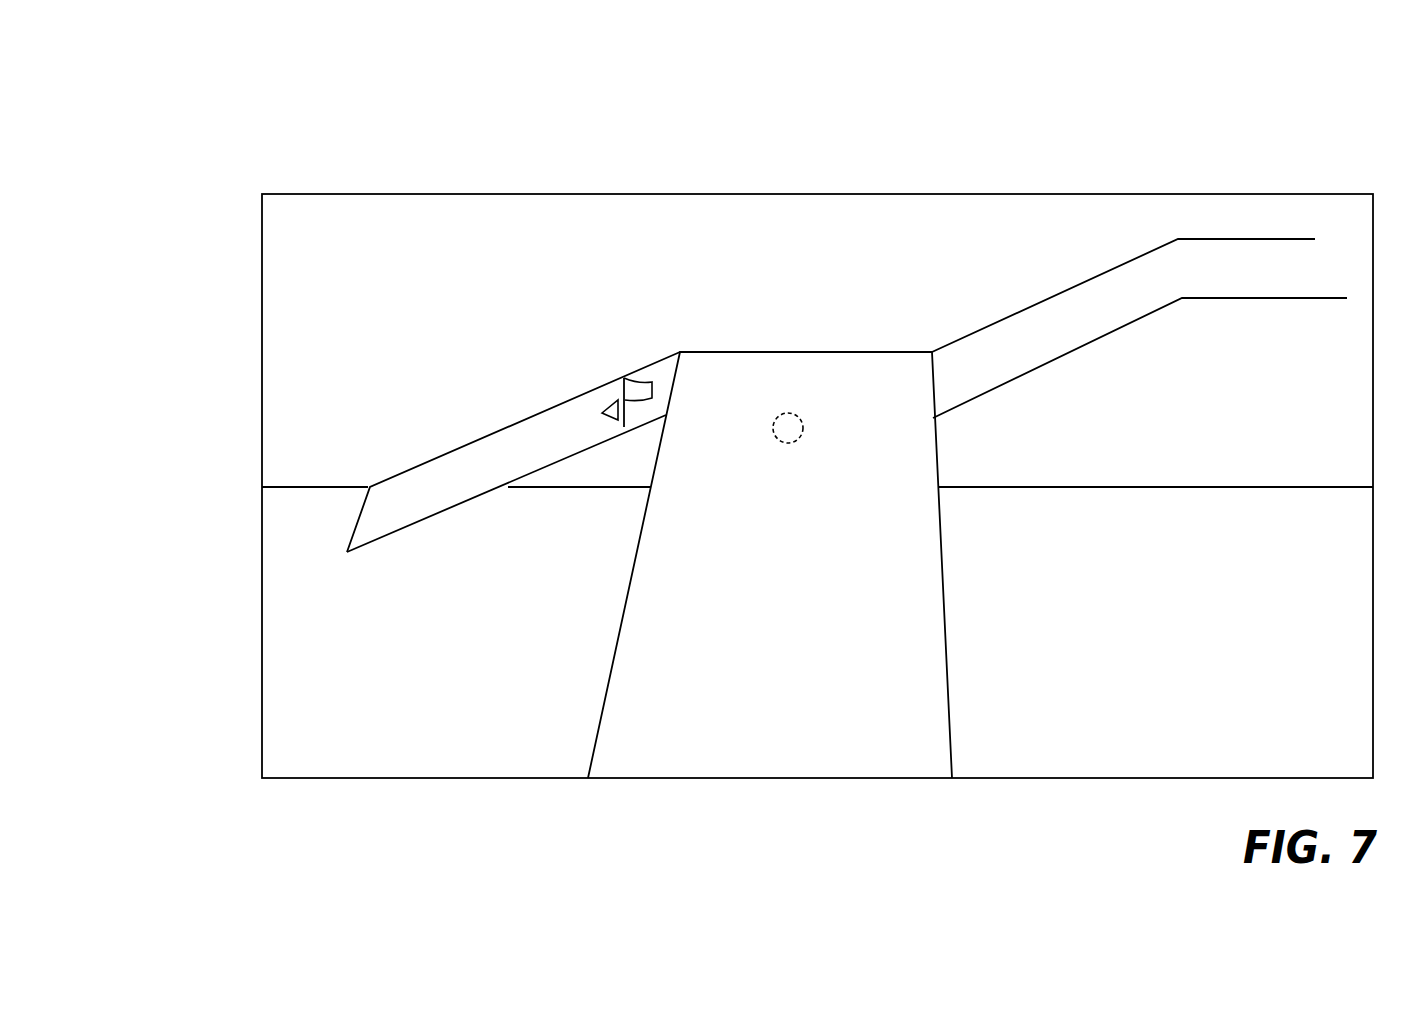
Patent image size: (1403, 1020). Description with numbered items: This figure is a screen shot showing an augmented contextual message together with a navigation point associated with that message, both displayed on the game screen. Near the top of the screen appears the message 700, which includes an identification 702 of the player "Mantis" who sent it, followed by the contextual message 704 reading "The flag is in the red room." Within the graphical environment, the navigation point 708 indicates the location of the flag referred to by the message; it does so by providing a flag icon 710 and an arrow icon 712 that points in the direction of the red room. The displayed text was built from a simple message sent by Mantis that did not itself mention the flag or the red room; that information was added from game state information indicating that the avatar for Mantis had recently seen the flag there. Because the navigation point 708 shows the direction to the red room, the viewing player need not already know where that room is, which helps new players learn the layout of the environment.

The message 700 is at (283, 250).
The identification 702 is at (325, 230).
The contextual message 704 is at (438, 223).
The navigation point 708 is at (602, 393).
The flag icon 710 is at (635, 402).
The arrow icon 712 is at (613, 423).